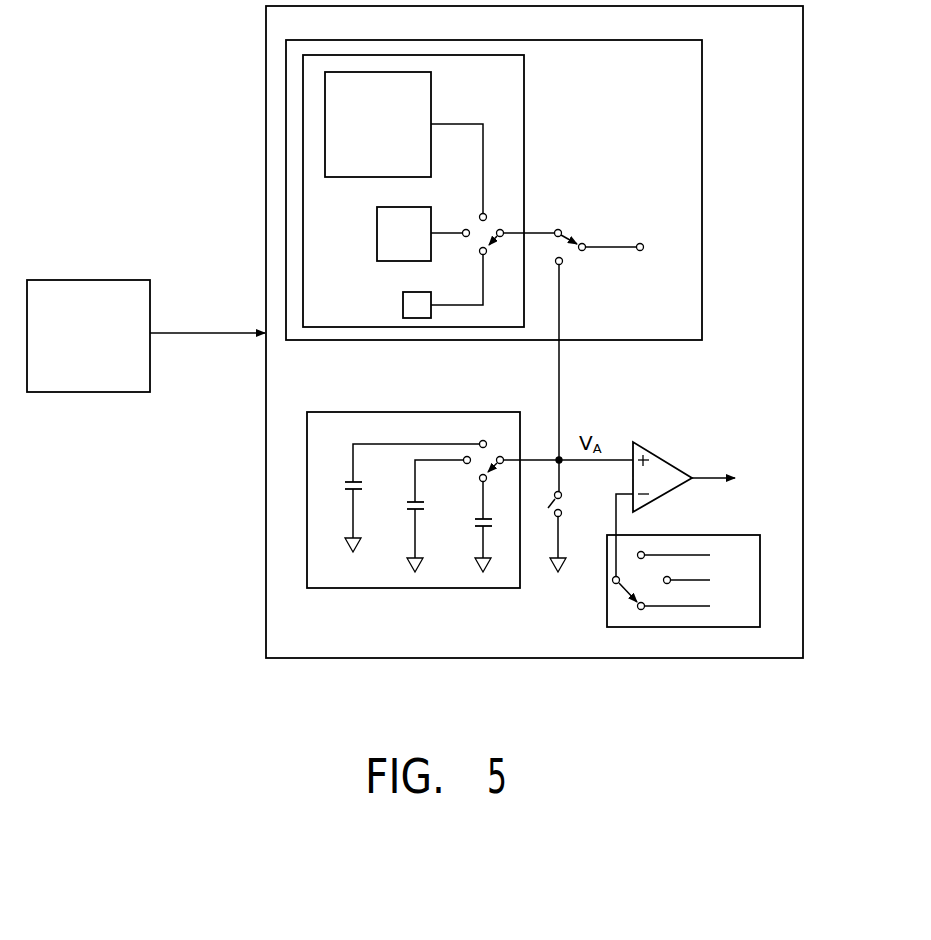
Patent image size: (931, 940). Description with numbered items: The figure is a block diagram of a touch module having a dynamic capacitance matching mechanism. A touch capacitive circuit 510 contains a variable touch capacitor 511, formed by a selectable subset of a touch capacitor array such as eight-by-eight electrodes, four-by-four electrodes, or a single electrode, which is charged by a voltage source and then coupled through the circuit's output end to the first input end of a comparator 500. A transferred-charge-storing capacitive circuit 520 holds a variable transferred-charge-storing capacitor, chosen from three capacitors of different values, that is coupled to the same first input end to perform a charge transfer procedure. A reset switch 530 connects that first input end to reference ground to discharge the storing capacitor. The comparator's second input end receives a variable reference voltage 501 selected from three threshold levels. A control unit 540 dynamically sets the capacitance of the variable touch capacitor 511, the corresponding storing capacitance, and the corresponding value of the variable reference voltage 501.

The comparator 500 is at (669, 459).
The variable reference voltage 501 is at (738, 535).
The touch capacitive circuit 510 is at (702, 137).
The variable touch capacitor 511 is at (524, 112).
The transferred-charge-storing capacitive circuit 520 is at (415, 412).
The reset switch 530 is at (569, 497).
The control unit 540 is at (98, 280).